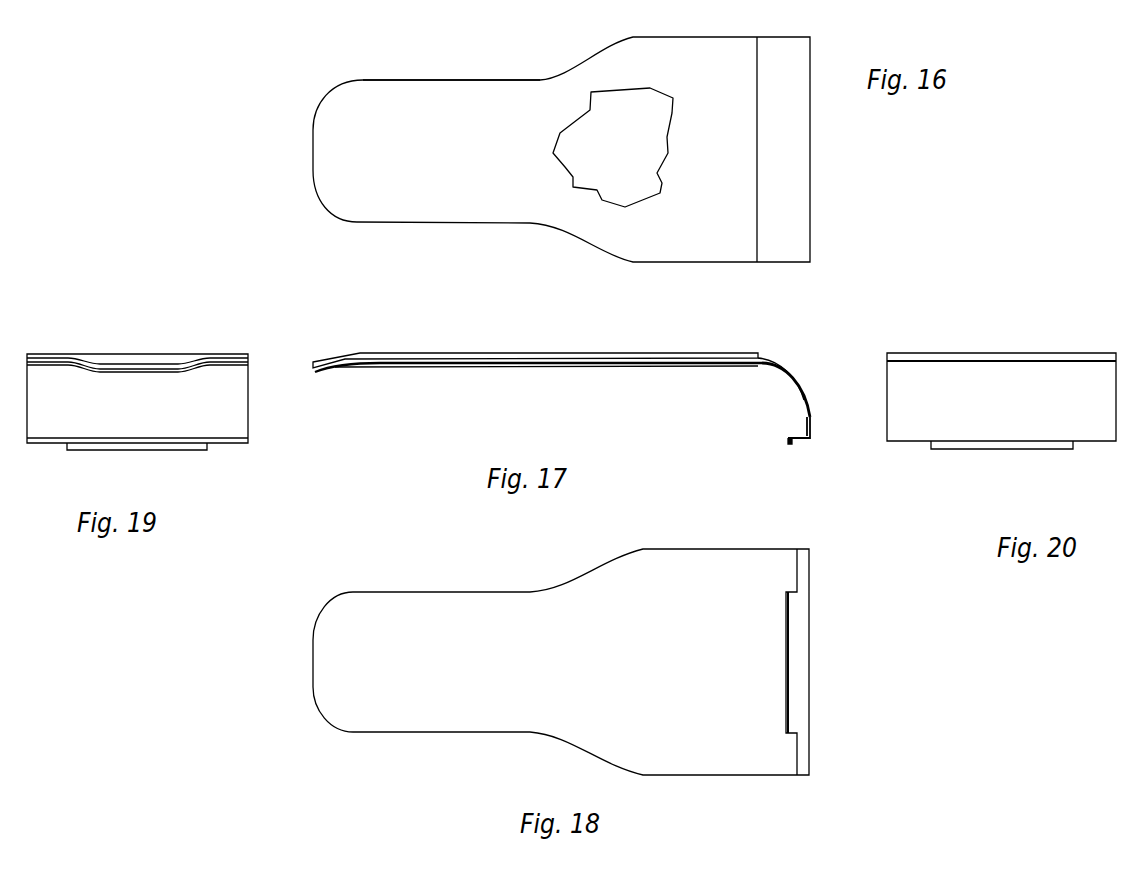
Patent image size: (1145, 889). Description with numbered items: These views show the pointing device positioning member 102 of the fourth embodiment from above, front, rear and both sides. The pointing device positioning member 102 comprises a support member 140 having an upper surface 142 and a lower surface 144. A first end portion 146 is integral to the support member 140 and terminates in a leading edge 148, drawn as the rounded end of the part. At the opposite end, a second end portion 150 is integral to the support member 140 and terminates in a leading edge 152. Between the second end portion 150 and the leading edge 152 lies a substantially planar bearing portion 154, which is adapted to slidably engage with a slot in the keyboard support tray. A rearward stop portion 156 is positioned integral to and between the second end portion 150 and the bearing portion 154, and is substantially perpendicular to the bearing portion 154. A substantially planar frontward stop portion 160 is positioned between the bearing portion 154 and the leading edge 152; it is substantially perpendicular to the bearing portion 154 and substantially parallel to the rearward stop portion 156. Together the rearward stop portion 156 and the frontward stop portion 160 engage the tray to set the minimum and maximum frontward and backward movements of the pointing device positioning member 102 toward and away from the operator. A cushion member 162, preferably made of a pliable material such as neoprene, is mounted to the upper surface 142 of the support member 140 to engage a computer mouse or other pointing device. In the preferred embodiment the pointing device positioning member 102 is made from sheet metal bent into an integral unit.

In FIG. 16, the pointing device positioning member 102 is at (862, 193).
In FIG. 17, the pointing device positioning member 102 is at (580, 423).
In FIG. 19, the pointing device positioning member 102 is at (164, 341).
In FIG. 20, the pointing device positioning member 102 is at (1001, 464).
In FIG. 18, the pointing device positioning member 102 is at (594, 678).
In FIG. 17, the support member 140 is at (528, 368).
In FIG. 16, the upper surface 142 is at (630, 166).
In FIG. 17, the lower surface 144 is at (472, 368).
In FIG. 18, the lower surface 144 is at (633, 663).
In FIG. 17, the first end portion 146 is at (348, 368).
In FIG. 18, the first end portion 146 is at (345, 630).
In FIG. 17, the leading edge 148 is at (315, 372).
In FIG. 18, the leading edge 148 is at (312, 673).
In FIG. 17, the second end portion 150 is at (800, 390).
In FIG. 17, the leading edge 152 is at (788, 444).
In FIG. 18, the leading edge 152 is at (785, 612).
In FIG. 17, the bearing portion 154 is at (798, 442).
In FIG. 18, the bearing portion 154 is at (797, 665).
In FIG. 17, the rearward stop portion 156 is at (807, 418).
In FIG. 17, the frontward stop portion 160 is at (783, 443).
In FIG. 19, the frontward stop portion 160 is at (177, 445).
In FIG. 20, the frontward stop portion 160 is at (1047, 445).
In FIG. 16, the cushion member 162 is at (408, 178).
In FIG. 17, the cushion member 162 is at (508, 353).
In FIG. 19, the cushion member 162 is at (213, 353).
In FIG. 20, the cushion member 162 is at (1033, 353).